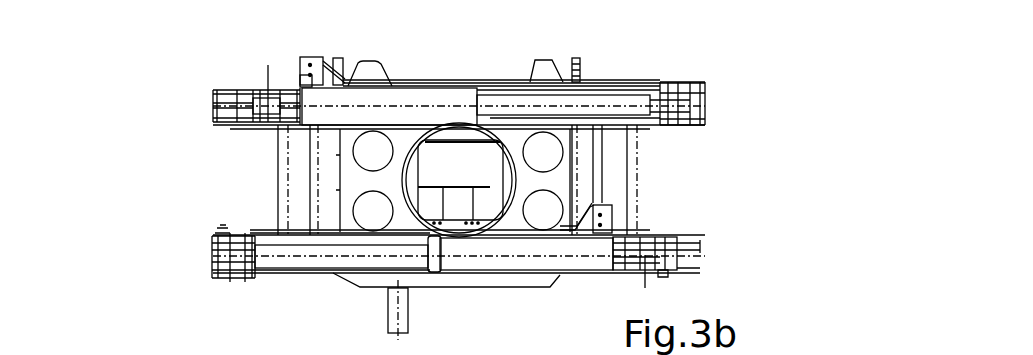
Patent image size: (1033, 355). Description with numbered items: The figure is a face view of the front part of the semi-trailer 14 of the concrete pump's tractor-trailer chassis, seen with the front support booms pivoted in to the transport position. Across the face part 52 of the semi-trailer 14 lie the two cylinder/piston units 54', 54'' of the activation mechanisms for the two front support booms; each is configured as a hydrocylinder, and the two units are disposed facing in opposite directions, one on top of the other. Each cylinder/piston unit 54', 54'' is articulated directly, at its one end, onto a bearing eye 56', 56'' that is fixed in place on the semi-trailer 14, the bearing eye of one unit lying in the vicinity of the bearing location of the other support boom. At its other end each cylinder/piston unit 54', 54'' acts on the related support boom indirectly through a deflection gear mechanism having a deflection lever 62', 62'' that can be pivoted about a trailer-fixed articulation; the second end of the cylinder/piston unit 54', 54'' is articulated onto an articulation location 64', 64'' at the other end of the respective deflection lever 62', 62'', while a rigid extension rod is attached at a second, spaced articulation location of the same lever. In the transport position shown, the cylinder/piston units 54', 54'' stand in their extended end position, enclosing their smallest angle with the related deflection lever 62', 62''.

The face part 52 is at (506, 198).
The semi-trailer 14 is at (582, 173).
The cylinder/piston unit 54' is at (459, 72).
The cylinder/piston unit 54'' is at (472, 228).
The bearing eye 56' is at (220, 118).
The bearing eye 56'' is at (630, 285).
The deflection lever 62' is at (503, 66).
The deflection lever 62'' is at (329, 289).
The articulation location 64' is at (713, 81).
The articulation location 64'' is at (180, 265).